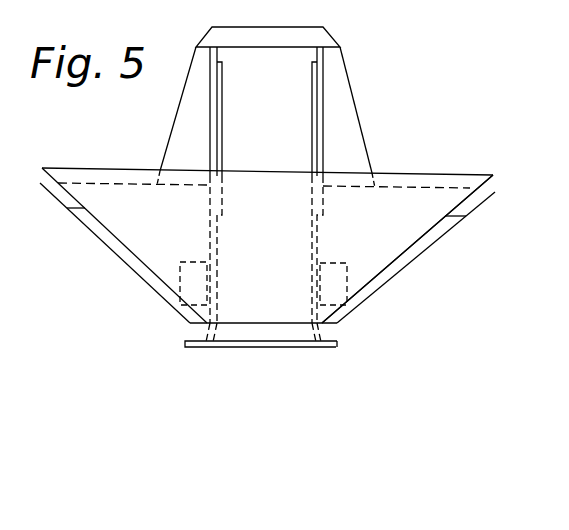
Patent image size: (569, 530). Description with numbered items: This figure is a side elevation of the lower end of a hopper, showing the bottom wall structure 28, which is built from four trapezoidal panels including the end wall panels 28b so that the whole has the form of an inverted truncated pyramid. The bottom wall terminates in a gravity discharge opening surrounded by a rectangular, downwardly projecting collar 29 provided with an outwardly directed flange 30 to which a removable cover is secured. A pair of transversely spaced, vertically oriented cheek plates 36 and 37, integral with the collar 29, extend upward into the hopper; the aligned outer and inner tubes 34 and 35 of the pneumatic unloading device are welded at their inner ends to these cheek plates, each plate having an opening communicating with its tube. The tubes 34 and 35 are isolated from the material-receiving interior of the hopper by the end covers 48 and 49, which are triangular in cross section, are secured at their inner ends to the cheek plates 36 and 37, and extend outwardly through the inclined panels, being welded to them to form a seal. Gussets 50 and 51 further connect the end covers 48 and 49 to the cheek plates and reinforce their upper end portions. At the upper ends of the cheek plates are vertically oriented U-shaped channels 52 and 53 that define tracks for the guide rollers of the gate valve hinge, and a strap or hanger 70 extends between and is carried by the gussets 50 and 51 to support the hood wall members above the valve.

The bottom wall structure 28 is at (448, 173).
The end wall panels 28b is at (387, 237).
The collar 29 is at (337, 347).
The flange 30 is at (185, 345).
The outer tube 34 is at (195, 273).
The inner tube 35 is at (327, 280).
The cheek plate 36 is at (222, 70).
The cheek plate 37 is at (318, 100).
The end cover 48 is at (113, 247).
The end cover 49 is at (440, 228).
The gusset 50 is at (183, 137).
The gusset 51 is at (352, 113).
The U-shaped channel 52 is at (222, 125).
The U-shaped channel 53 is at (312, 143).
The strap or hanger 70 is at (282, 38).